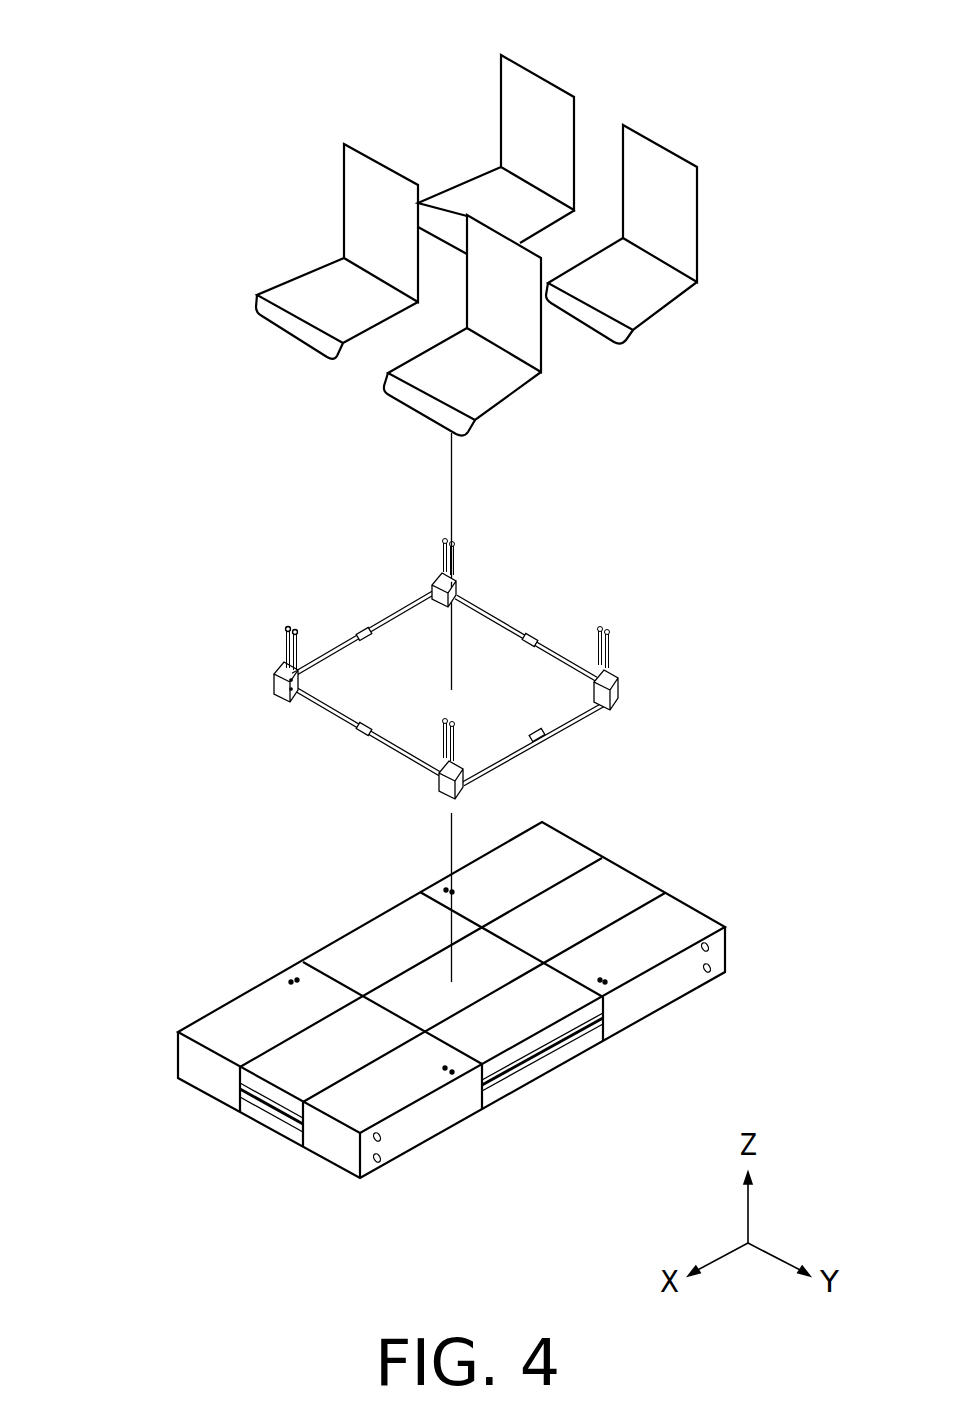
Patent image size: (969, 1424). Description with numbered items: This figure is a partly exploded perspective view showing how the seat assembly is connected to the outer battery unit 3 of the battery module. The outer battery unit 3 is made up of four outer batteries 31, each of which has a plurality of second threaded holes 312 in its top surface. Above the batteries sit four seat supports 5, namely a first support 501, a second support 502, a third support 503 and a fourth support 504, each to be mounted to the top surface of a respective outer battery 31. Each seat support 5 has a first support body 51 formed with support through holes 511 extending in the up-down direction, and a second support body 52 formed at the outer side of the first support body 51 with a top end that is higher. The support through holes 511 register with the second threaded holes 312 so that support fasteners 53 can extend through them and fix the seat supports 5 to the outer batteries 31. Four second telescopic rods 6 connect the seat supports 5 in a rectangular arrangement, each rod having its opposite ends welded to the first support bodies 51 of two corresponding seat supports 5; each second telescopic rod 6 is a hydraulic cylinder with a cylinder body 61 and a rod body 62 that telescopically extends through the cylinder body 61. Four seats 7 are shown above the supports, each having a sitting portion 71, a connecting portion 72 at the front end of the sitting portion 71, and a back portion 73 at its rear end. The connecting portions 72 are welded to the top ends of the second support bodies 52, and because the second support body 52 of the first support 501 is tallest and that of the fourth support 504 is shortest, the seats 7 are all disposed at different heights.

The outer battery unit 3 is at (436, 1013).
The outer battery 31 is at (563, 848).
The second threaded hole 312 is at (295, 983).
The seat support 5 is at (449, 663).
The first support 501 is at (451, 780).
The second support 502 is at (286, 682).
The third support 503 is at (606, 690).
The fourth support 504 is at (444, 590).
The first support body 51 is at (418, 711).
The support through hole 511 is at (293, 690).
The second support body 52 is at (282, 660).
The support fastener 53 is at (297, 630).
The second telescopic rod 6 is at (449, 663).
The cylinder body 61 is at (398, 750).
The rod body 62 is at (332, 713).
The seat 7 is at (507, 244).
The sitting portion 71 is at (488, 198).
The connecting portion 72 is at (274, 328).
The back portion 73 is at (550, 127).